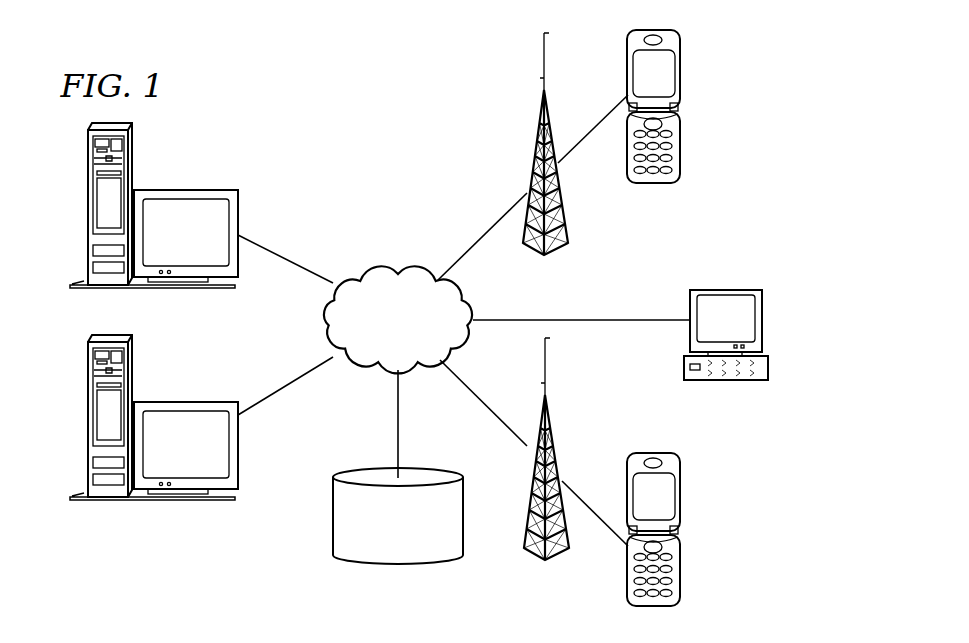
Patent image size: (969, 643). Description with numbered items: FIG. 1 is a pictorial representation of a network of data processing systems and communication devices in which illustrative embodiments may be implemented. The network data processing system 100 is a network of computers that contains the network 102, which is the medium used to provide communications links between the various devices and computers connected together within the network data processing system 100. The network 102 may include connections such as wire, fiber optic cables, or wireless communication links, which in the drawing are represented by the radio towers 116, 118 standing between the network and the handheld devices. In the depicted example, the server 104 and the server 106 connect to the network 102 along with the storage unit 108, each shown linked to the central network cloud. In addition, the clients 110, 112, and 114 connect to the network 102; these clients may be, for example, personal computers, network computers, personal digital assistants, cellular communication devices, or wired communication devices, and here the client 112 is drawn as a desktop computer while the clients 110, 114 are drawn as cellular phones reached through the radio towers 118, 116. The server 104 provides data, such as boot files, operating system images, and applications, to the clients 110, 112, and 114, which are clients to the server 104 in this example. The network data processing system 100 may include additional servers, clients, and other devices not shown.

The network data processing system 100 is at (448, 158).
The network 102 is at (368, 271).
The server 104 is at (88, 205).
The server 106 is at (88, 423).
The storage unit 108 is at (380, 565).
The client 110 is at (683, 142).
The client 112 is at (763, 320).
The client 114 is at (683, 565).
The radio tower 116 is at (533, 553).
The radio tower 118 is at (557, 248).